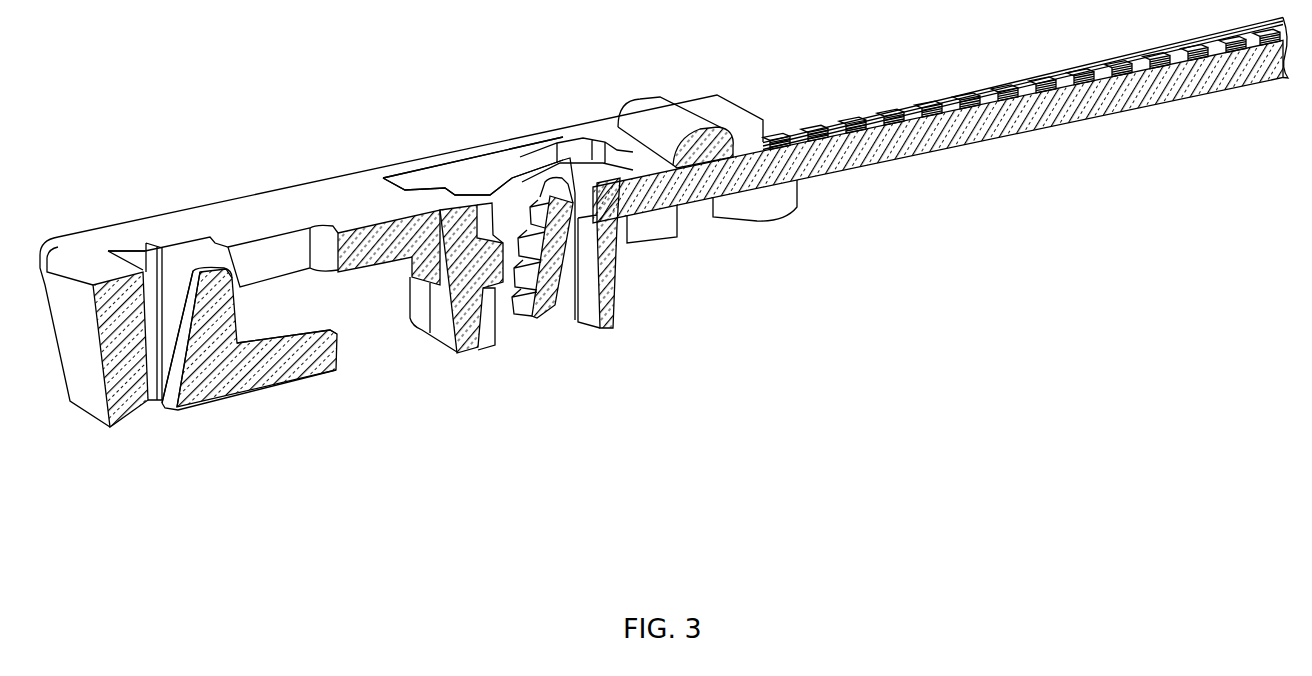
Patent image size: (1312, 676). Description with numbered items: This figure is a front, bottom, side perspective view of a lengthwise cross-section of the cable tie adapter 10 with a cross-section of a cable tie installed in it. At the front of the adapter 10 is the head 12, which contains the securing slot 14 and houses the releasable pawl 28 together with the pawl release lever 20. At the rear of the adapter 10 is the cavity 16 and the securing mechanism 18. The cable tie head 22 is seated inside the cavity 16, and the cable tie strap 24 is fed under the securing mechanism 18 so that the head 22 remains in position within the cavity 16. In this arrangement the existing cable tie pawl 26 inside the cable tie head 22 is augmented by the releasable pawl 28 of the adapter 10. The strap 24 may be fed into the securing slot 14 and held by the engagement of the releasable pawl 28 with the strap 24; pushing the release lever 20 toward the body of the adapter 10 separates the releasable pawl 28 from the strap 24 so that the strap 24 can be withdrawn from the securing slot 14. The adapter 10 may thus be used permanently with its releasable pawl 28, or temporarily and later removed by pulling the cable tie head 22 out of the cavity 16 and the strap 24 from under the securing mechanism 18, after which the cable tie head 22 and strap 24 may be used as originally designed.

The cable tie adapter 10 is at (158, 168).
The head 12 is at (103, 380).
The securing slot 14 is at (128, 248).
The cavity 16 is at (505, 148).
The securing mechanism 18 is at (662, 102).
The pawl release lever 20 is at (330, 370).
The cable tie head 22 is at (479, 335).
The cable tie strap 24 is at (1083, 117).
The cable tie pawl 26 is at (548, 255).
The releasable pawl 28 is at (197, 387).